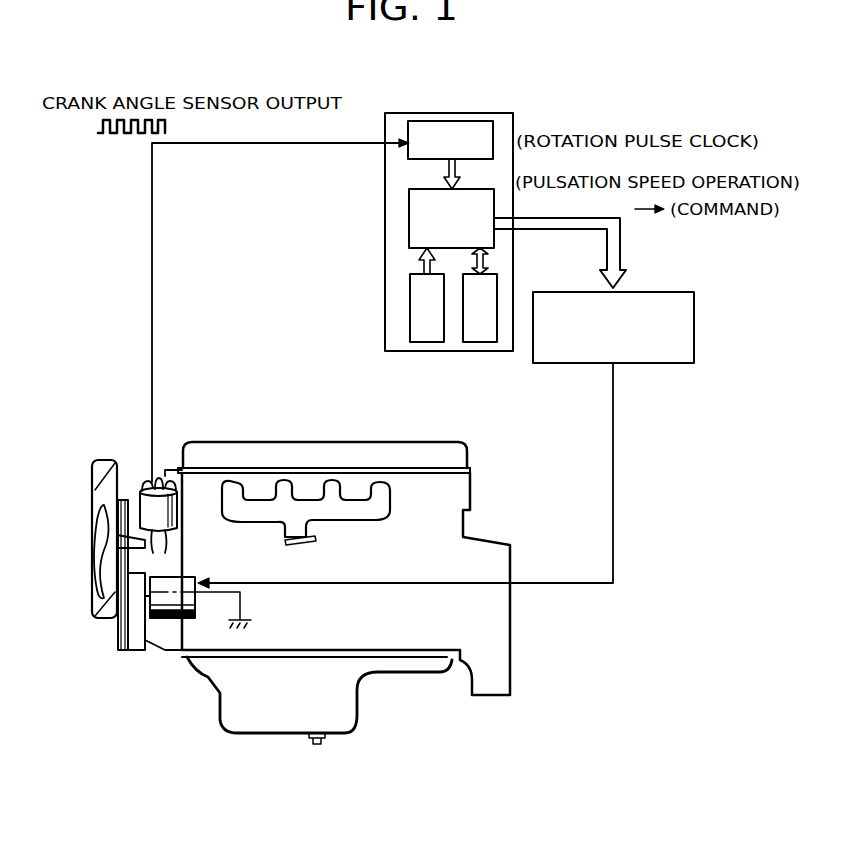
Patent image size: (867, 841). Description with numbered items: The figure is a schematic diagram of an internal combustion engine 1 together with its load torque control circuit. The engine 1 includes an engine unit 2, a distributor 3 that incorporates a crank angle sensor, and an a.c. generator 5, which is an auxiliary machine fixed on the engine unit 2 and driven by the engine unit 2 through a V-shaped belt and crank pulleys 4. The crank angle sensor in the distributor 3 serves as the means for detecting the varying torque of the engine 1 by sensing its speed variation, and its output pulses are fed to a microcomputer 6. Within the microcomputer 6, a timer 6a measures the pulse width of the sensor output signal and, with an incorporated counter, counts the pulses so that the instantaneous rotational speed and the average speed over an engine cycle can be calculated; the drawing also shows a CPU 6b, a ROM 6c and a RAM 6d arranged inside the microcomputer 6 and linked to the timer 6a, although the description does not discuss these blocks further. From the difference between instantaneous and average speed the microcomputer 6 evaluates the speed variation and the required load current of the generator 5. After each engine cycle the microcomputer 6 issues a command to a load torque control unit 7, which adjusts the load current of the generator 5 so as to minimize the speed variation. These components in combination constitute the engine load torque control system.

The internal combustion engine 1 is at (468, 461).
The engine unit 2 is at (463, 528).
The distributor 3 is at (140, 484).
The crank pulleys 4 is at (125, 655).
The a.c. generator 5 is at (166, 620).
The microcomputer 6 is at (386, 118).
The timer 6a is at (408, 159).
The CPU 6b is at (409, 221).
The ROM 6c is at (423, 343).
The RAM 6d is at (481, 343).
The load torque control unit 7 is at (561, 292).